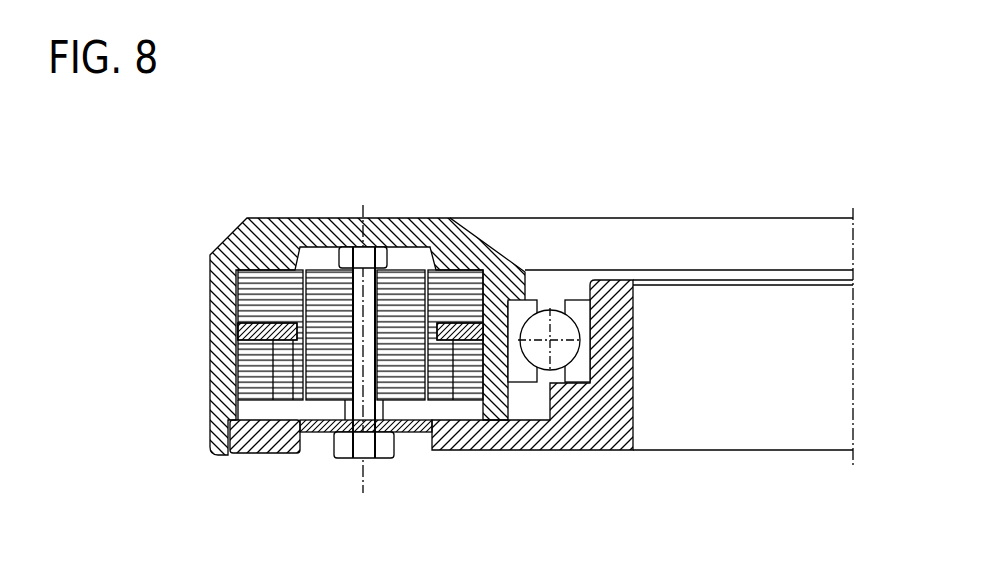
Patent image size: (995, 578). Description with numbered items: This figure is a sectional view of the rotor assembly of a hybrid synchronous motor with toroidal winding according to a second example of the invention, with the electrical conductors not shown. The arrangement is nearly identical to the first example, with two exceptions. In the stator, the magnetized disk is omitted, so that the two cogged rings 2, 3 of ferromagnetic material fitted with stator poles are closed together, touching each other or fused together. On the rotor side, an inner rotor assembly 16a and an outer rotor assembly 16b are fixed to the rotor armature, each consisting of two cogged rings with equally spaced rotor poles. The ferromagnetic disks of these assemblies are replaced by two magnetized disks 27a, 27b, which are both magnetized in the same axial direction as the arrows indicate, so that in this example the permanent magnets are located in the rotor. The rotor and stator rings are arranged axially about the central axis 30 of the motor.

The cogged ring 2 is at (400, 300).
The cogged ring 3 is at (420, 393).
The inner rotor assembly 16a is at (511, 420).
The outer rotor assembly 16b is at (275, 453).
The magnetized disk 27a is at (470, 333).
The magnetized disk 27b is at (232, 337).
The central axis 30 is at (853, 210).